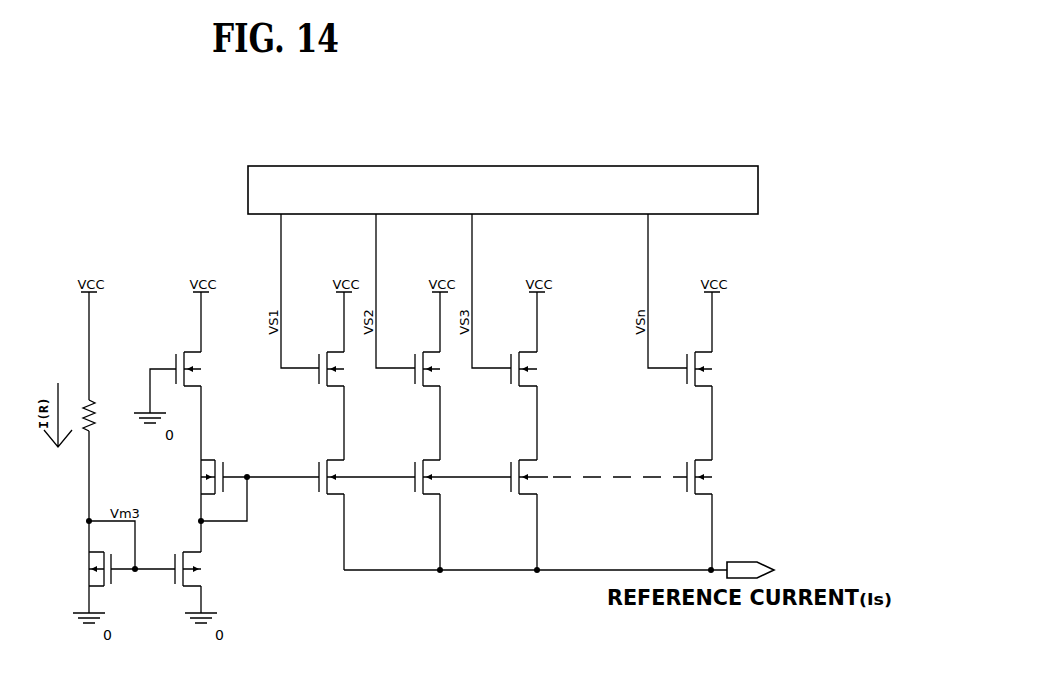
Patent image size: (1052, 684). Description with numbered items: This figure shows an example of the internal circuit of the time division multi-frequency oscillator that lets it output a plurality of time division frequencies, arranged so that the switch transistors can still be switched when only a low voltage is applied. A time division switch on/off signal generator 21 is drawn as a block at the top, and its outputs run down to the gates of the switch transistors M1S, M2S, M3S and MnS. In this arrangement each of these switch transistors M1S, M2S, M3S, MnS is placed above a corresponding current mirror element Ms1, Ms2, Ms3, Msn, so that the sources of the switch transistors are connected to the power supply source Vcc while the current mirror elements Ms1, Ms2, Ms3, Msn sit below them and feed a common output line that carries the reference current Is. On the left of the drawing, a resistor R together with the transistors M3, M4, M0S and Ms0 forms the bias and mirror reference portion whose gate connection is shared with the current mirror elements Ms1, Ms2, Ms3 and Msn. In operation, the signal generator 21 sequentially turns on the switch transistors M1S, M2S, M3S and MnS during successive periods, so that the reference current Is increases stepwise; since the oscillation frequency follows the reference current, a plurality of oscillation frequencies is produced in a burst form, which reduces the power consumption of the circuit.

The time division switch on/off signal generator 21 is at (758, 189).
The resistor R is at (100, 415).
The transistor M3 is at (86, 569).
The transistor M4 is at (178, 564).
The transistor M0S is at (175, 376).
The transistor Ms0 is at (260, 485).
The switch transistor M1S is at (321, 363).
The switch transistor M2S is at (417, 363).
The switch transistor M3S is at (513, 363).
The switch transistor MnS is at (689, 363).
The current mirror element Ms1 is at (357, 473).
The current mirror element Ms2 is at (453, 473).
The current mirror element Ms3 is at (520, 473).
The current mirror element Msn is at (688, 473).